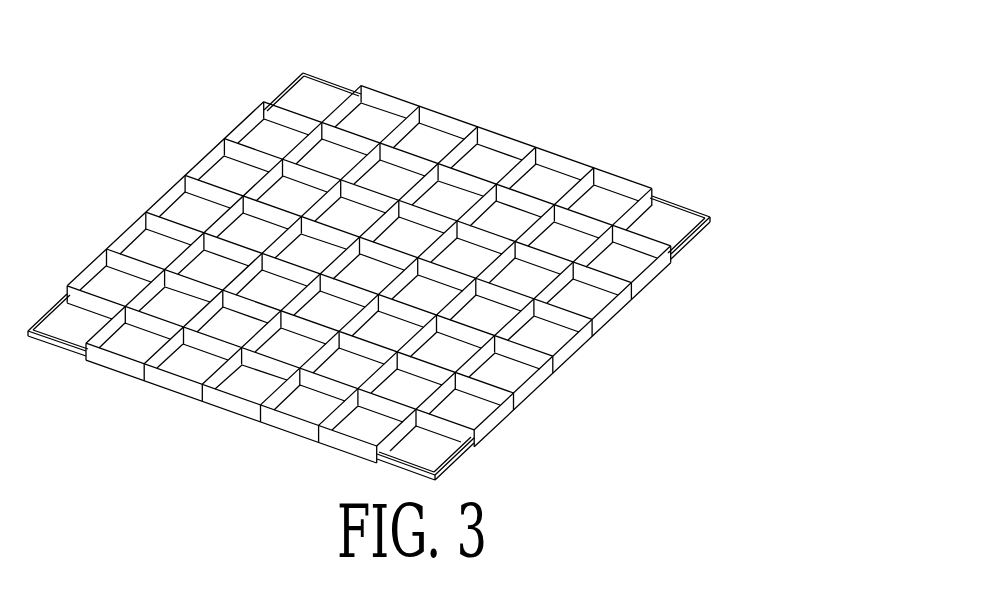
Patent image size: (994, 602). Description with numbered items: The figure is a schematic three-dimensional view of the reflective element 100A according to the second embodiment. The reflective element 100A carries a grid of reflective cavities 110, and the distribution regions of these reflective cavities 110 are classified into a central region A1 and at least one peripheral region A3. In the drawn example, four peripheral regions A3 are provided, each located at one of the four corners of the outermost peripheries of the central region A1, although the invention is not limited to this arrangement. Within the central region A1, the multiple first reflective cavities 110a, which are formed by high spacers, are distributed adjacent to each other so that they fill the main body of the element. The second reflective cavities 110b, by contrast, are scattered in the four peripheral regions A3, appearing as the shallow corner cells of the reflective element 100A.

The reflective element 100A is at (131, 34).
The reflective cavities 110 is at (816, 252).
The first reflective cavities 110a is at (628, 266).
The second reflective cavities 110b is at (669, 224).
The central region A1 is at (657, 179).
The peripheral region A3 is at (716, 200).